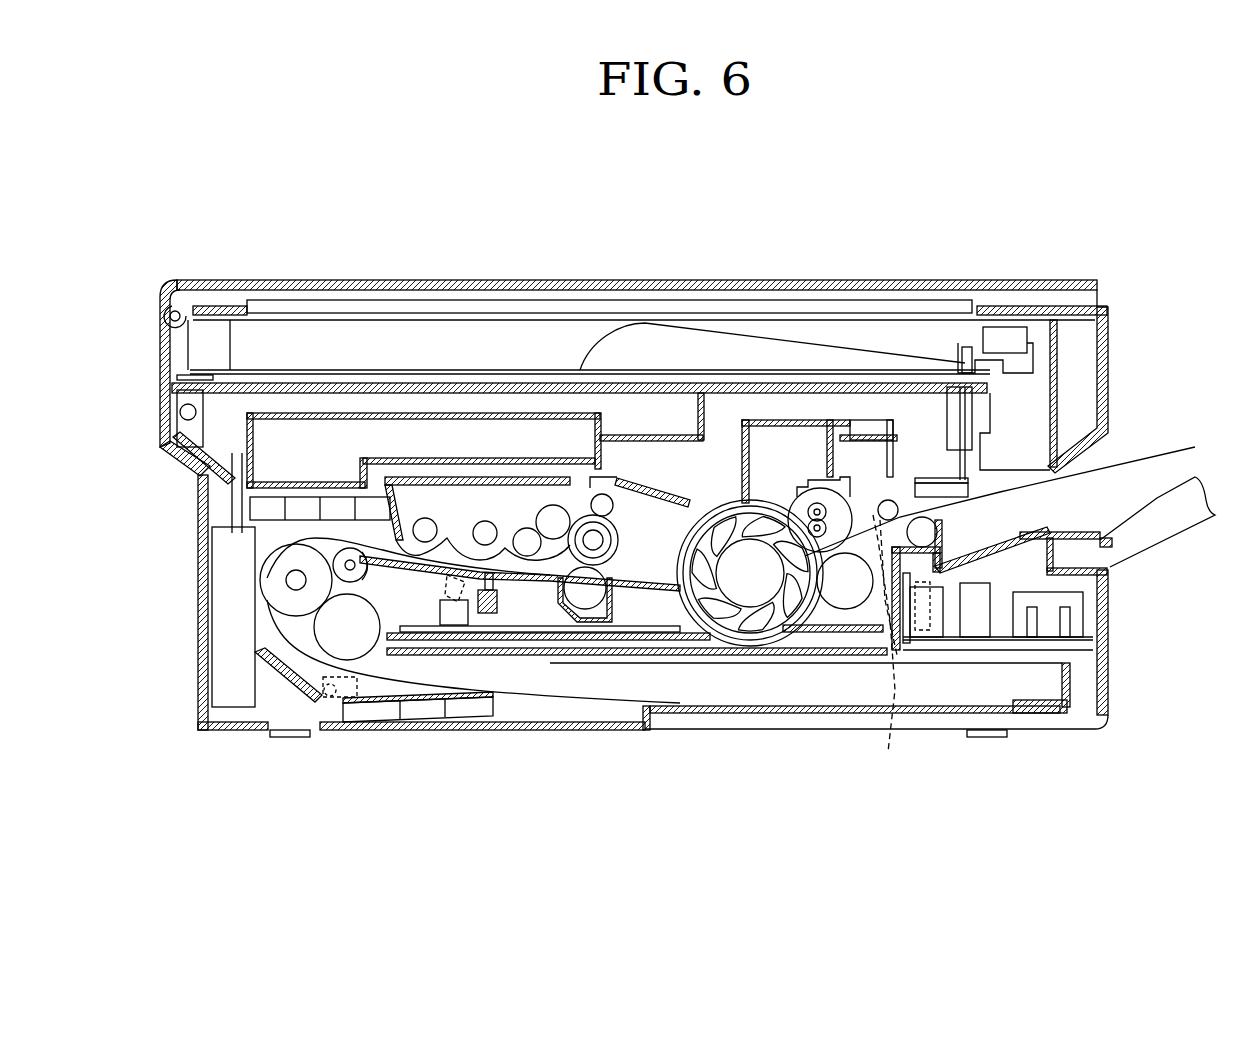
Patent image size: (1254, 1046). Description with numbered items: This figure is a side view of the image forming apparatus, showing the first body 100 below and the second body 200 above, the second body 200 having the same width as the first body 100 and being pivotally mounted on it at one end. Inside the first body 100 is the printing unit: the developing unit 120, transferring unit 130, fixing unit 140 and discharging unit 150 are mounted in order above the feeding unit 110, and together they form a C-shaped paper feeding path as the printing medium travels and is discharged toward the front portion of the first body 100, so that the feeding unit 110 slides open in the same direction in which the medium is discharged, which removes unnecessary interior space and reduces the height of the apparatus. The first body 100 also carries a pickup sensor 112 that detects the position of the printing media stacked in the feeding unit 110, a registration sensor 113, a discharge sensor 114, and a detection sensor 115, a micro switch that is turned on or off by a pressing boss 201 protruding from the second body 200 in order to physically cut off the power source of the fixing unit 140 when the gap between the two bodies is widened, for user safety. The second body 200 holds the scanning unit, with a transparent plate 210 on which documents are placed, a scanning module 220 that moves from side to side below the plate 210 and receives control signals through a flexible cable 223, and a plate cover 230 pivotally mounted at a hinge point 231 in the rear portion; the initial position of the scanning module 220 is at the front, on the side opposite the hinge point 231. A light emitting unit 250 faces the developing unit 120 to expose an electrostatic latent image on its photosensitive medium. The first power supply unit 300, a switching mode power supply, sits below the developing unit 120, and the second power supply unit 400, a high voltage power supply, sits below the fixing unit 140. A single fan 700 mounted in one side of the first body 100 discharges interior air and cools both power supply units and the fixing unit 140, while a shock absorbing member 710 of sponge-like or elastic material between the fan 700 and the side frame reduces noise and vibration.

The first body 100 is at (1143, 652).
The feeding unit 110 is at (963, 686).
The pickup sensor 112 is at (340, 692).
The registration sensor 113 is at (447, 677).
The discharge sensor 114 is at (885, 647).
The detection sensor 115 is at (953, 488).
The developing unit 120 is at (548, 578).
The transferring unit 130 is at (580, 600).
The fixing unit 140 is at (838, 552).
The discharging unit 150 is at (1047, 560).
The second body 200 is at (1137, 250).
The pressing boss 201 is at (968, 417).
The plate 210 is at (330, 305).
The scanning module 220 is at (1013, 333).
The flexible cable 223 is at (777, 338).
The plate cover 230 is at (497, 281).
The hinge point 231 is at (163, 316).
The light emitting unit 250 is at (267, 462).
The first power supply unit 300 is at (553, 560).
The second power supply unit 400 is at (980, 610).
The fan 700 is at (755, 625).
The shock absorbing member 710 is at (785, 620).